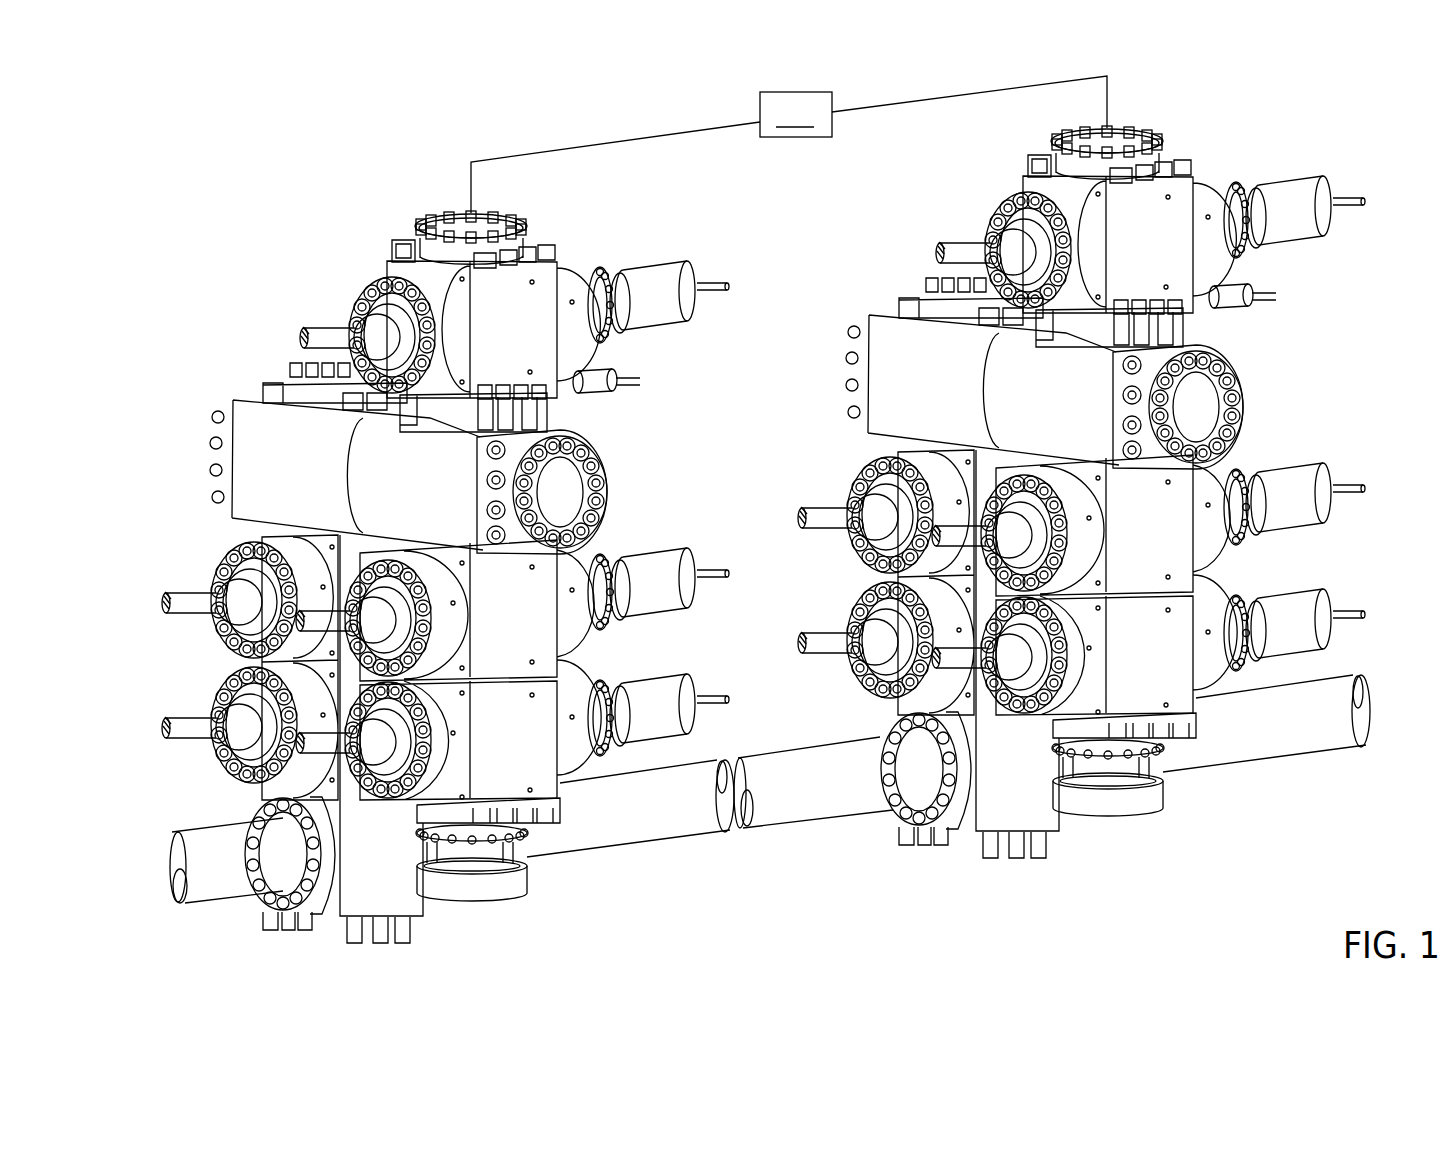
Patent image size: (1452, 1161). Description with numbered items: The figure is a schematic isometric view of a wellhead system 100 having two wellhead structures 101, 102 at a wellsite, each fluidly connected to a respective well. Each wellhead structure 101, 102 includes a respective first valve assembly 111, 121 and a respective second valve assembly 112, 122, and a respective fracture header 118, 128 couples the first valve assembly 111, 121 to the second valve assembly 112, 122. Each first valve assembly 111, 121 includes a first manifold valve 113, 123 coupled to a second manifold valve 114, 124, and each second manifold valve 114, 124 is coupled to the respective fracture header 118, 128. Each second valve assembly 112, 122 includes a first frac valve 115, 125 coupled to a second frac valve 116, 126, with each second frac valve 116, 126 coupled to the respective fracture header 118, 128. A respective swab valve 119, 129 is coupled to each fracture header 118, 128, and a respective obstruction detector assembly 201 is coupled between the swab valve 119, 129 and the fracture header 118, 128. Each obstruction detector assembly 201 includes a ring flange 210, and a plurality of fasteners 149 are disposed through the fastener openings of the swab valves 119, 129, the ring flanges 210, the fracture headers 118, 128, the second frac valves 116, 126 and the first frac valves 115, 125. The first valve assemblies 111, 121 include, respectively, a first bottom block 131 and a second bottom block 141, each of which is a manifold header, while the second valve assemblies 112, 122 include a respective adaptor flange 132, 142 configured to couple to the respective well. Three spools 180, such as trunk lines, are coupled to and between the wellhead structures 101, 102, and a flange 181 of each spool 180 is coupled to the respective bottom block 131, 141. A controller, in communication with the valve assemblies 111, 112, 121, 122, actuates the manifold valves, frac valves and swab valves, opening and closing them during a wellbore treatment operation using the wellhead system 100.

The wellhead system 100 is at (218, 157).
The wellhead structure 101 is at (530, 912).
The wellhead structure 102 is at (1085, 870).
The first valve assembly 111 is at (158, 571).
The second valve assembly 112 is at (412, 208).
The first manifold valve 113 is at (158, 743).
The second manifold valve 114 is at (158, 607).
The first frac valve 115 is at (615, 667).
The second frac valve 116 is at (642, 534).
The fracture header 118 is at (205, 430).
The swab valve 119 is at (626, 256).
The first valve assembly 121 is at (832, 451).
The second valve assembly 122 is at (1165, 122).
The first manifold valve 123 is at (838, 623).
The second manifold valve 124 is at (827, 492).
The first frac valve 125 is at (1306, 581).
The second frac valve 126 is at (1330, 452).
The fracture header 128 is at (871, 297).
The swab valve 129 is at (1308, 172).
The first bottom block 131 is at (357, 915).
The adaptor flange 132 is at (522, 887).
The second bottom block 141 is at (972, 836).
The adaptor flange 142 is at (1160, 793).
The fasteners 149 is at (520, 212).
The spools 180 is at (193, 900).
The flange 181 is at (318, 893).
The obstruction detector assembly 201 is at (614, 366).
The ring flange 210 is at (438, 410).